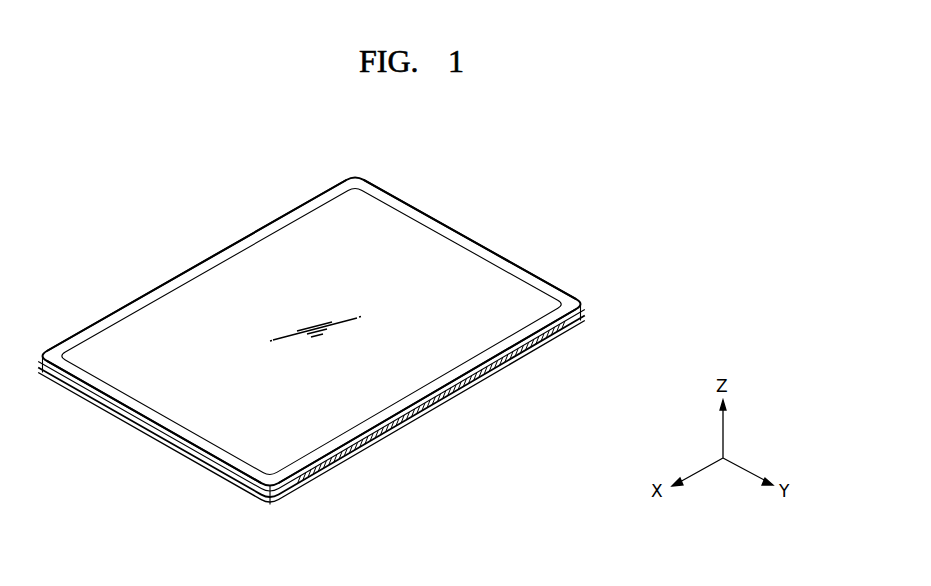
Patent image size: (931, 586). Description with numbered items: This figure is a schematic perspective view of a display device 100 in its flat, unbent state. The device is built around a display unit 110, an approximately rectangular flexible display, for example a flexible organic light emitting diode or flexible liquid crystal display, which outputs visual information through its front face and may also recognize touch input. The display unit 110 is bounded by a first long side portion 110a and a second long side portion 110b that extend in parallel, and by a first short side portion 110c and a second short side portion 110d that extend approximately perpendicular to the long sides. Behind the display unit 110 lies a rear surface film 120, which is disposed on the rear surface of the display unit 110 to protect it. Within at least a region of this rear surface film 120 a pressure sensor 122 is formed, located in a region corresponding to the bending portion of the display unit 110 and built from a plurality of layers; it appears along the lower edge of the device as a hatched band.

The display device 100 is at (347, 339).
The display unit 110 is at (395, 228).
The first long side portion 110a is at (437, 400).
The second long side portion 110b is at (230, 245).
The first short side portion 110c is at (473, 240).
The second short side portion 110d is at (150, 423).
The rear surface film 120 is at (342, 404).
The pressure sensor 122 is at (504, 368).